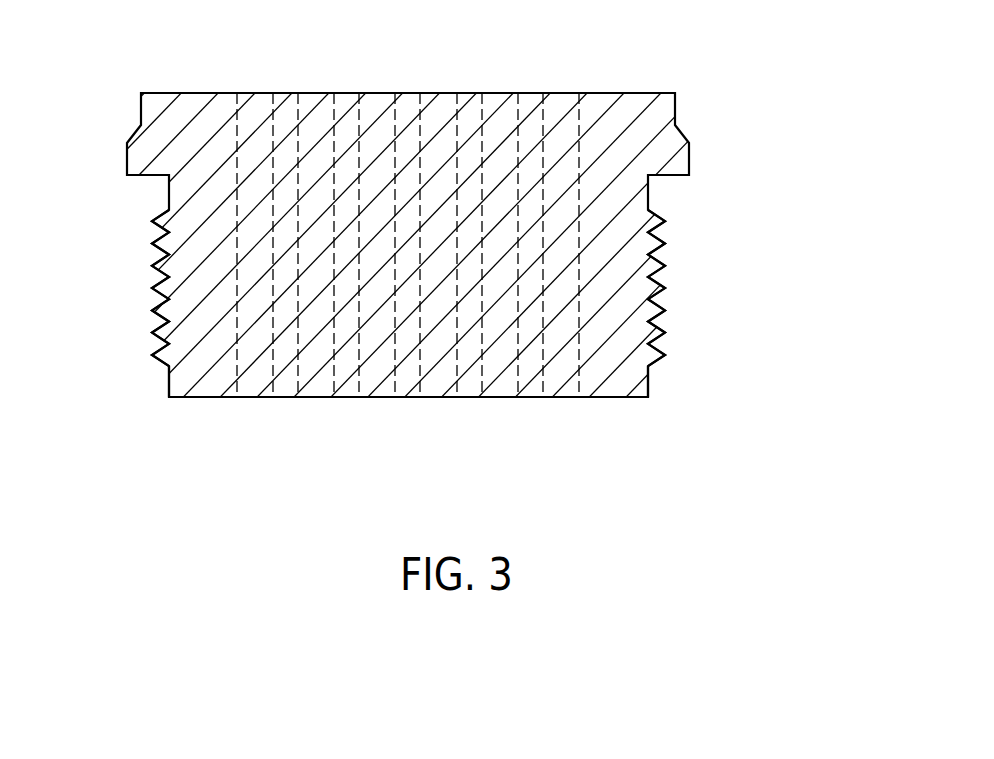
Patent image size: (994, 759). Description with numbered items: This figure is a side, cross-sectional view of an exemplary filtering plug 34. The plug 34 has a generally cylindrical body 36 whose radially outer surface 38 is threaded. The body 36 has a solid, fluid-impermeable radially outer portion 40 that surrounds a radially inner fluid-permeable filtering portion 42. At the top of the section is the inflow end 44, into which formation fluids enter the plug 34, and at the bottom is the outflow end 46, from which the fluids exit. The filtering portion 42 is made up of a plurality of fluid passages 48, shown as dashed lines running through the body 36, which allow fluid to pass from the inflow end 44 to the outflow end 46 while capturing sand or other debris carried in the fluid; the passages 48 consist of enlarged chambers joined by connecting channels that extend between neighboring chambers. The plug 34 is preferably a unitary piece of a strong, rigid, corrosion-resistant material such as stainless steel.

The filtering plug 34 is at (728, 98).
The body 36 is at (606, 93).
The threaded radially outer surface 38 is at (160, 292).
The radially outer portion 40 is at (208, 382).
The radially inner fluid-permeable filtering portion 42 is at (318, 380).
The inflow end 44 is at (412, 93).
The outflow end 46 is at (432, 397).
The fluid passages 48 is at (395, 123).